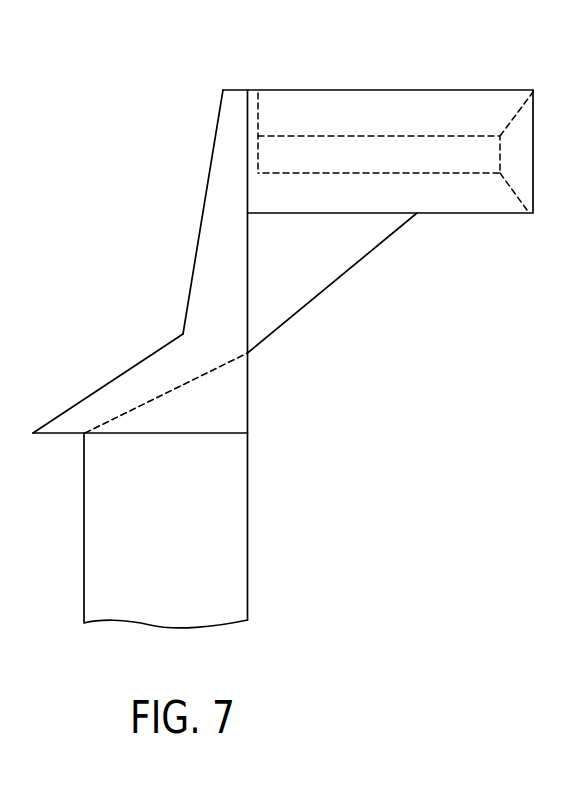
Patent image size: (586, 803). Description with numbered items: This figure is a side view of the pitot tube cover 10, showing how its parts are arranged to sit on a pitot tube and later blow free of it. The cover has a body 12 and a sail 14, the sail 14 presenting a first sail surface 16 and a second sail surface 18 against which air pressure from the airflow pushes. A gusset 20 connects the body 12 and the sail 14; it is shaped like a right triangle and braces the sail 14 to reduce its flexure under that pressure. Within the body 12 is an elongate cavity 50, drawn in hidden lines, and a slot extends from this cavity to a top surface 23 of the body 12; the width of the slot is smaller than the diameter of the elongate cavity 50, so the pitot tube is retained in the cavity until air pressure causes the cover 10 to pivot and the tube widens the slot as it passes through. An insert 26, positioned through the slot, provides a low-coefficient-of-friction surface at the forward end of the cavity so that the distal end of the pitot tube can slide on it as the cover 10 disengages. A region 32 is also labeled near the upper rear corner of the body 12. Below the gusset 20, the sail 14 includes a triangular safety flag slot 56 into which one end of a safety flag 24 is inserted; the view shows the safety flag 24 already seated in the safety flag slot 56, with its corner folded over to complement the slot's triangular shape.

The pitot tube cover 10 is at (144, 102).
The body 12 is at (494, 233).
The sail 14 is at (119, 251).
The first sail surface 16 is at (205, 190).
The second sail surface 18 is at (132, 367).
The gusset 20 is at (330, 273).
The top surface 23 is at (453, 88).
The safety flag 24 is at (237, 555).
The insert 26 is at (258, 93).
The corner portion 32 is at (533, 90).
The elongate cavity 50 is at (367, 158).
The safety flag slot 56 is at (233, 378).